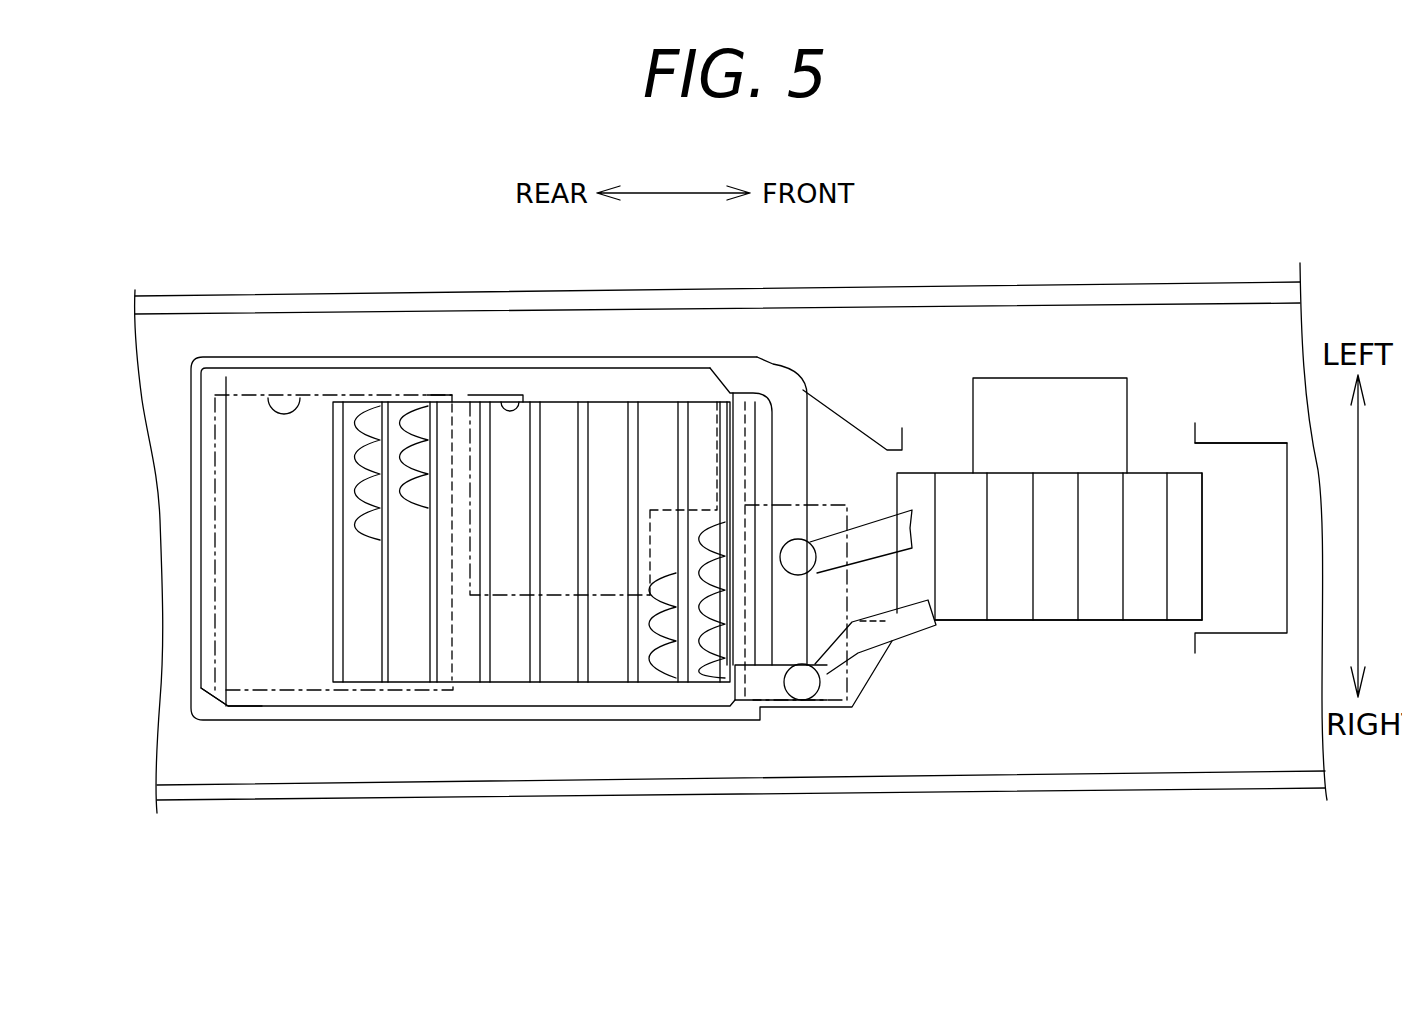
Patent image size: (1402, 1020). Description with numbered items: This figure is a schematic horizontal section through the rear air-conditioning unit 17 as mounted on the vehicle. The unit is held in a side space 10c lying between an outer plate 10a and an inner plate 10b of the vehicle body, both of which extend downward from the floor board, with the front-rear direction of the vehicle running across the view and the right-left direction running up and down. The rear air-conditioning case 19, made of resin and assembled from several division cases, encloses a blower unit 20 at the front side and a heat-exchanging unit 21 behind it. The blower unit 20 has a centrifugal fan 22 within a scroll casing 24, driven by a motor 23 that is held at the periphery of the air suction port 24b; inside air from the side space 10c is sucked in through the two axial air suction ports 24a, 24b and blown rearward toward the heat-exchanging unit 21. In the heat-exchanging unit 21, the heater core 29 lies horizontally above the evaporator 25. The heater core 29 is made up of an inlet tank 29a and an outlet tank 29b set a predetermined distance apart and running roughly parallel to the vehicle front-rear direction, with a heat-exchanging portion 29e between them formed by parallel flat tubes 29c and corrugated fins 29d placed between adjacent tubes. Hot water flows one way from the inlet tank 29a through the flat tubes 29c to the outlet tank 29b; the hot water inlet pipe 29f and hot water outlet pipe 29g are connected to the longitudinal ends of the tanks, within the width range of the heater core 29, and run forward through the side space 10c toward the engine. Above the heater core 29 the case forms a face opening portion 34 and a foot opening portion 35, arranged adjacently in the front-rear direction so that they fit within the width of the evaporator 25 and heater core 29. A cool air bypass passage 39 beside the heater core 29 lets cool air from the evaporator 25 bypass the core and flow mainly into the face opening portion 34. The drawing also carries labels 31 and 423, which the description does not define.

The outer plate 10a is at (1000, 284).
The inner plate 10b is at (765, 797).
The side space 10c is at (572, 760).
The rear air-conditioning unit 17 is at (888, 412).
The rear air-conditioning case 19 is at (680, 351).
The blower unit 20 is at (1129, 652).
The heat-exchanging unit 21 is at (412, 337).
The centrifugal fan 22 is at (1203, 592).
The motor 23 is at (1128, 395).
The scroll casing 24 is at (1253, 636).
The air suction port 24a is at (1070, 630).
The air suction port 24b is at (1158, 443).
The evaporator 25 is at (260, 708).
The heater core 29 is at (331, 652).
The inlet tank 29a is at (538, 692).
The outlet tank 29b is at (557, 392).
The flat tubes 29c is at (383, 562).
The corrugated fins 29d is at (356, 418).
The heat-exchanging portion 29e is at (394, 538).
The hot water inlet pipe 29f is at (827, 692).
The hot water outlet pipe 29g is at (793, 437).
The link lever 31 is at (857, 680).
The face opening portion 34 is at (268, 396).
The foot opening portion 35 is at (505, 396).
The cool air bypass passage 39 is at (267, 608).
The partition plate 423 is at (507, 663).